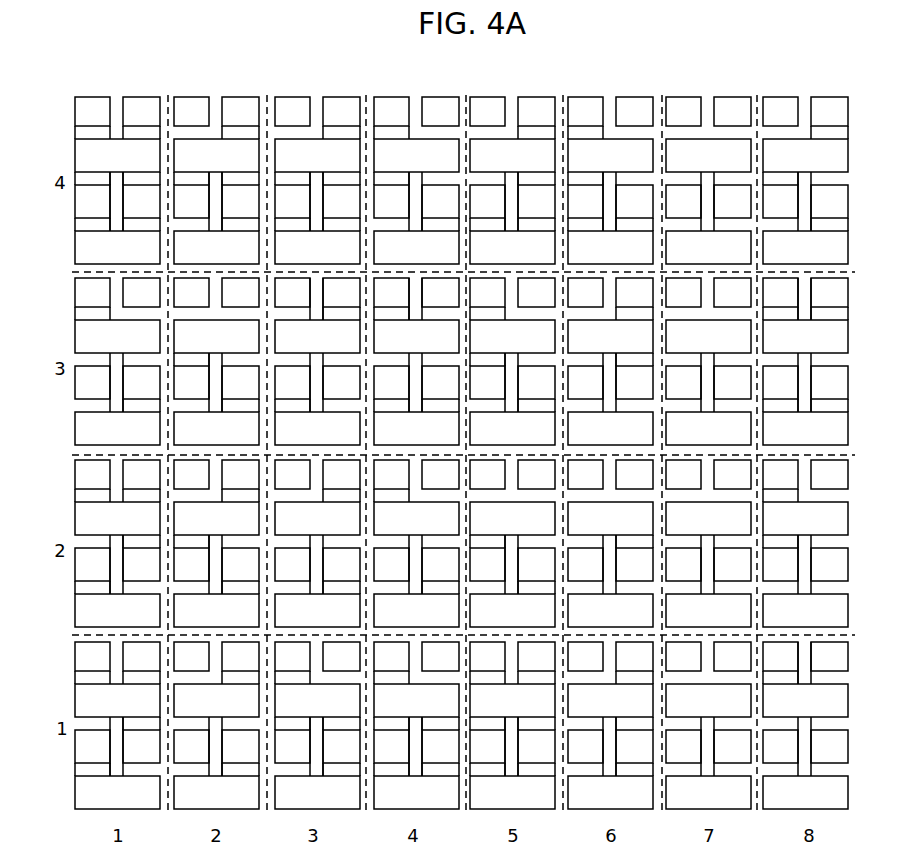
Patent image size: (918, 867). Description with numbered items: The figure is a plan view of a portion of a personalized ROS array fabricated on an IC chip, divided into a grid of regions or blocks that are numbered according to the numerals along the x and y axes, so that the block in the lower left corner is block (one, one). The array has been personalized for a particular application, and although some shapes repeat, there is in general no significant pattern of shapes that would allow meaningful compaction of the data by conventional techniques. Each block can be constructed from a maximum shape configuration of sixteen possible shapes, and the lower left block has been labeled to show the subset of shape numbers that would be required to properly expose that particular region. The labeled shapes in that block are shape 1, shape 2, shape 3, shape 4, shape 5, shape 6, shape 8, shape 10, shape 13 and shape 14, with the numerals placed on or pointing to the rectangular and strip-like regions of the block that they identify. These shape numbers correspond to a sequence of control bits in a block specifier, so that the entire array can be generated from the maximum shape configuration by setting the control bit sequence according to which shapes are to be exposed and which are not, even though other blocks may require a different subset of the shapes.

The shape number 1 is at (132, 722).
The shape number 2 is at (92, 746).
The shape number 3 is at (117, 700).
The shape number 4 is at (92, 659).
The shape number 5 is at (141, 659).
The shape number 6 is at (141, 746).
The shape number 8 is at (82, 769).
The shape number 10 is at (83, 674).
The shape number 13 is at (131, 679).
The shape number 14 is at (136, 723).